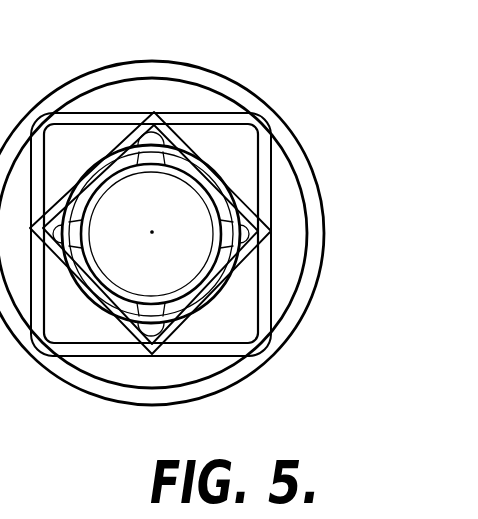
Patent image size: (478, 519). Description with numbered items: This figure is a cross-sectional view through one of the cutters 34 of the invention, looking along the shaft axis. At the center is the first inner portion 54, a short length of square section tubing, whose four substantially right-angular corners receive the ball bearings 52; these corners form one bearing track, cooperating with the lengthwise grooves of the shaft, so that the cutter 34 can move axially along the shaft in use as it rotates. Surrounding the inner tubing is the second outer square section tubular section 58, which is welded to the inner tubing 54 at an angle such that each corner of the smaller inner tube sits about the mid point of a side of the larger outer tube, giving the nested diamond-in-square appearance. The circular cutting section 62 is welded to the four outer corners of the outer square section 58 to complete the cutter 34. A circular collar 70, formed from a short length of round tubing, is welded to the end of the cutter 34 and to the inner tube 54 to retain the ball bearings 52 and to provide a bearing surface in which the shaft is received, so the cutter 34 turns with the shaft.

The cutter 34 is at (95, 405).
The ball bearings 52 is at (295, 252).
The first inner portion 54 is at (243, 232).
The second outer square section tubular section 58 is at (97, 114).
The circular cutting section 62 is at (164, 70).
The circular collar 70 is at (192, 173).